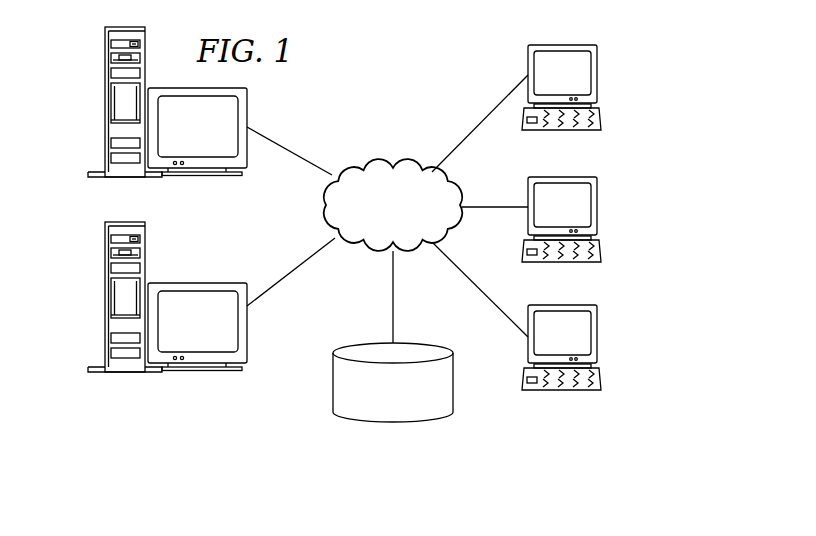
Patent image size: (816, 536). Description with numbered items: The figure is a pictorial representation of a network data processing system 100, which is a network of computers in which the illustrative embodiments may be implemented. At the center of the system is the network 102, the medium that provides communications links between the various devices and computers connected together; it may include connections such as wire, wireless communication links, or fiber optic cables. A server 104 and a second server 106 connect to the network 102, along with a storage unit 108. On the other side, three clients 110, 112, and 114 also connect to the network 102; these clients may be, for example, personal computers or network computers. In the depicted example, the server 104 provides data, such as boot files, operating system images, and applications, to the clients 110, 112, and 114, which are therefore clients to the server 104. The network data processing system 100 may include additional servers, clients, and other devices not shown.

The network data processing system 100 is at (444, 53).
The network 102 is at (368, 159).
The server 104 is at (104, 103).
The server 106 is at (104, 298).
The storage unit 108 is at (378, 421).
The client 110 is at (597, 72).
The client 112 is at (597, 206).
The client 114 is at (597, 335).